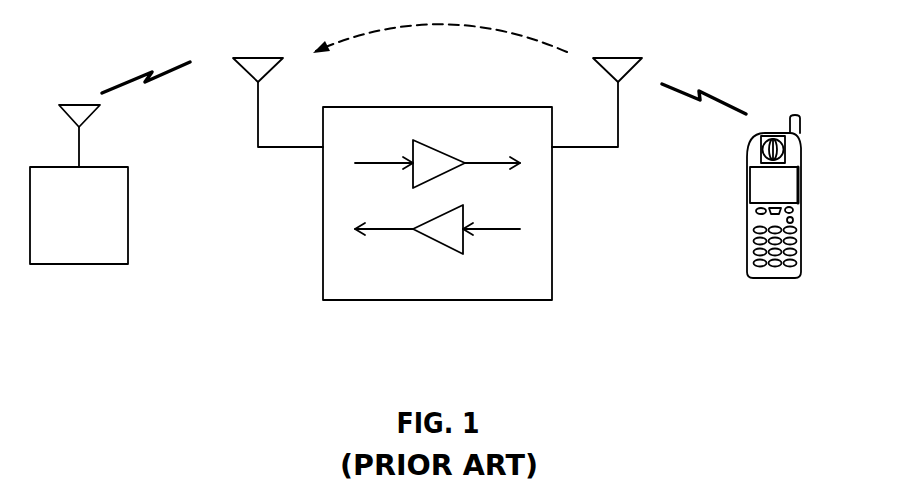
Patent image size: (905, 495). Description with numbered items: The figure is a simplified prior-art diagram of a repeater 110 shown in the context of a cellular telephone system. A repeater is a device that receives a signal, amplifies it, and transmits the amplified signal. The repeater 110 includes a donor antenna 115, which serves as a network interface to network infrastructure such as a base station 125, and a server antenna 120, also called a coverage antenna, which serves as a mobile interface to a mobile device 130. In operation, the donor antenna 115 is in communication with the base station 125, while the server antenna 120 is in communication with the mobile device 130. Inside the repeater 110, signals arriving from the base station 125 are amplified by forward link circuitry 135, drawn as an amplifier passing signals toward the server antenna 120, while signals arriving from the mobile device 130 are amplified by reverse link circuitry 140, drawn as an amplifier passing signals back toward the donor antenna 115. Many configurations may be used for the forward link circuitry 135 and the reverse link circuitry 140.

The repeater 110 is at (485, 300).
The donor antenna 115 is at (270, 70).
The server antenna 120 is at (601, 68).
The base station 125 is at (95, 264).
The mobile device 130 is at (773, 280).
The forward link circuitry 135 is at (440, 151).
The reverse link circuitry 140 is at (442, 243).